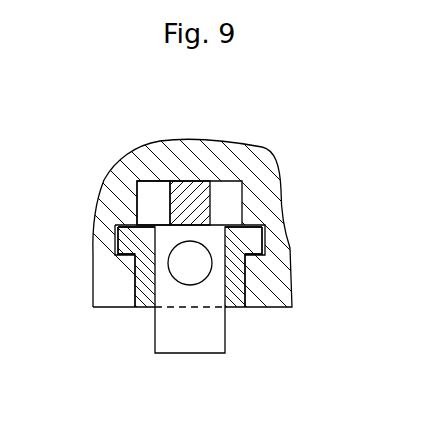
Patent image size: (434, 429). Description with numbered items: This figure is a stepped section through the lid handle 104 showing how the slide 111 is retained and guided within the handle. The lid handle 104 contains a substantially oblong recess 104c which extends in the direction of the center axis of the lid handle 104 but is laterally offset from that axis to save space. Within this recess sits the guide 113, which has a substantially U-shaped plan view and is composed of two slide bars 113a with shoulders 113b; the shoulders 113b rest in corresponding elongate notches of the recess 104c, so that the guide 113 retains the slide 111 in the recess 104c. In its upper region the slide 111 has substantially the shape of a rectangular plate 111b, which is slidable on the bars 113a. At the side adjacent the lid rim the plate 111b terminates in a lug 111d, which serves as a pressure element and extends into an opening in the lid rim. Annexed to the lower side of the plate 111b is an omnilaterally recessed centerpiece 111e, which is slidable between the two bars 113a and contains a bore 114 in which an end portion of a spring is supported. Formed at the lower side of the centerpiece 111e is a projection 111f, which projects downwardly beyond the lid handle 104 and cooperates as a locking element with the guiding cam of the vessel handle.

The lid handle 104 is at (272, 192).
The oblong recess 104c is at (266, 245).
The slide 111 is at (240, 178).
The rectangular plate 111b is at (148, 188).
The lug 111d is at (197, 190).
The centerpiece 111e is at (163, 293).
The projection 111f is at (217, 347).
The guide 113 is at (243, 308).
The slide bars 113a is at (148, 298).
The shoulders 113b is at (132, 227).
The bore 114 is at (188, 268).